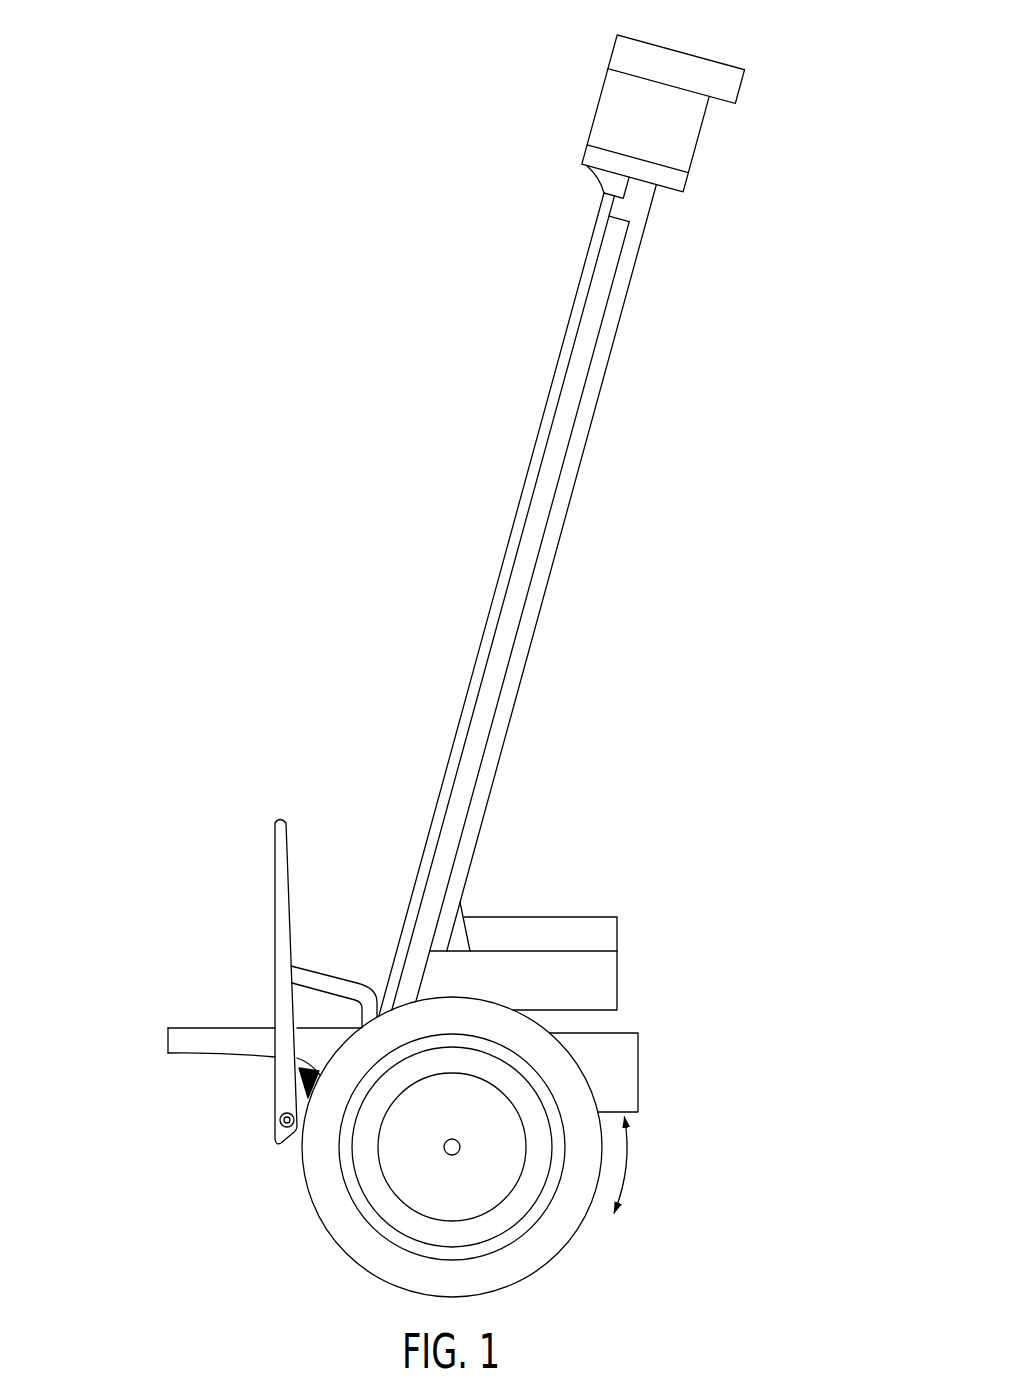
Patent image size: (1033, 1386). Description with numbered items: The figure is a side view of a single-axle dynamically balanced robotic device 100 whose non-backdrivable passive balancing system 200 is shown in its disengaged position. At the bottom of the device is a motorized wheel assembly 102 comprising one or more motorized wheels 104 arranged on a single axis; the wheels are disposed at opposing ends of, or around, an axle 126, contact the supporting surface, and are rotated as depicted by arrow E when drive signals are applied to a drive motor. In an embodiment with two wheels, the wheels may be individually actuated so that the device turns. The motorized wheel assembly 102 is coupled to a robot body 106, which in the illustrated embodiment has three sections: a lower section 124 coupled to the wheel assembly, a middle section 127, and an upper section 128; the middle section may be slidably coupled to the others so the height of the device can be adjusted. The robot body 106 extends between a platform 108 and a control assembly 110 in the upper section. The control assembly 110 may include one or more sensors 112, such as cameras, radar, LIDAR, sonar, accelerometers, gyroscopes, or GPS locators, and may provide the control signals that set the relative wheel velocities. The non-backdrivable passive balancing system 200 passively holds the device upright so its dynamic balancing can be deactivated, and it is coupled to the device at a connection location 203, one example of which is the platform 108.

The single-axle dynamically balanced robotic device 100 is at (461, 648).
The motorized wheel assembly 102 is at (558, 908).
The motorized wheel 104 is at (310, 1187).
The robot body 106 is at (588, 383).
The platform 108 is at (632, 1043).
The control assembly 110 is at (694, 136).
The sensor 112 is at (673, 96).
The lower section 124 is at (198, 1003).
The axle 126 is at (334, 948).
The middle section 127 is at (605, 514).
The upper section 128 is at (731, 51).
The non-backdrivable passive balancing system 200 is at (222, 1020).
The connection location 203 is at (225, 1166).
The arrow E is at (628, 1162).